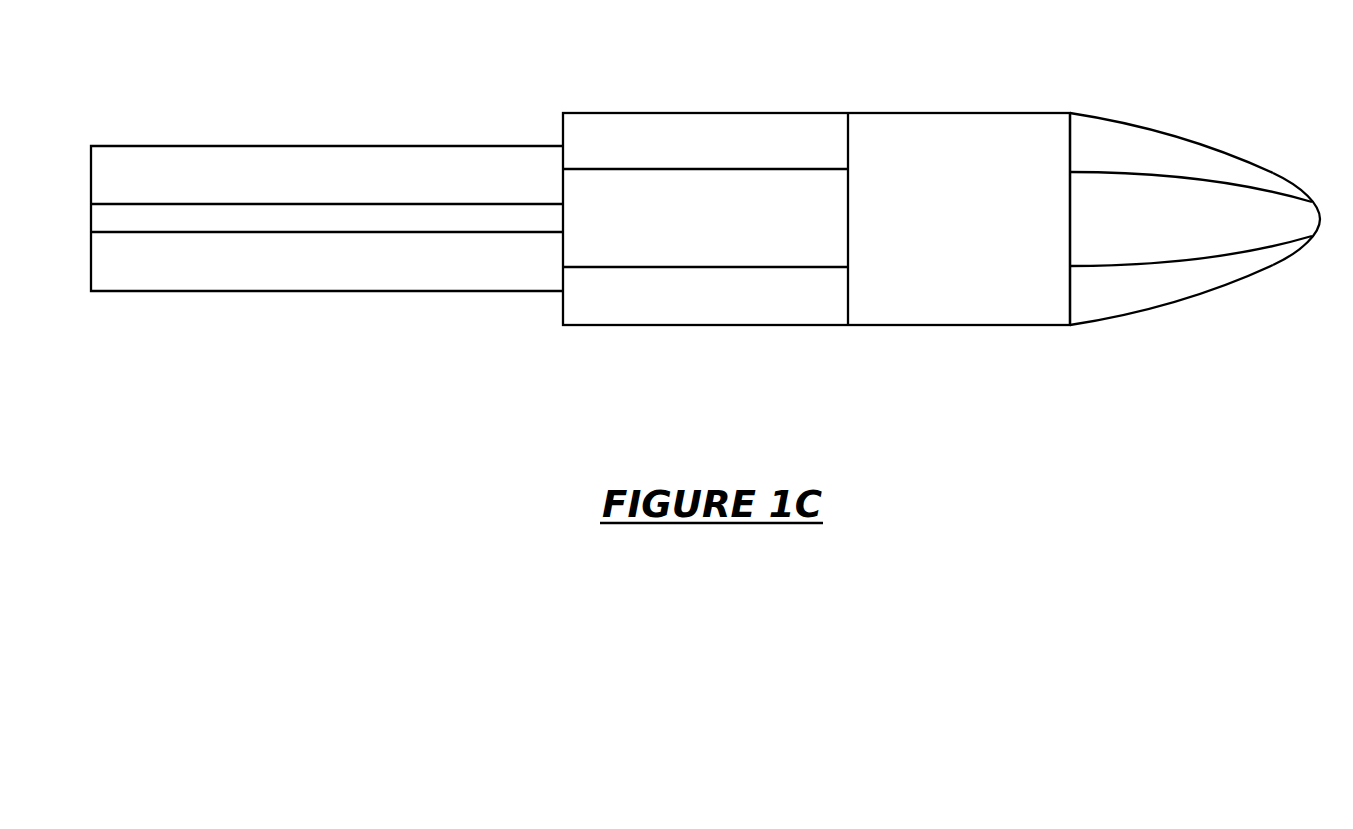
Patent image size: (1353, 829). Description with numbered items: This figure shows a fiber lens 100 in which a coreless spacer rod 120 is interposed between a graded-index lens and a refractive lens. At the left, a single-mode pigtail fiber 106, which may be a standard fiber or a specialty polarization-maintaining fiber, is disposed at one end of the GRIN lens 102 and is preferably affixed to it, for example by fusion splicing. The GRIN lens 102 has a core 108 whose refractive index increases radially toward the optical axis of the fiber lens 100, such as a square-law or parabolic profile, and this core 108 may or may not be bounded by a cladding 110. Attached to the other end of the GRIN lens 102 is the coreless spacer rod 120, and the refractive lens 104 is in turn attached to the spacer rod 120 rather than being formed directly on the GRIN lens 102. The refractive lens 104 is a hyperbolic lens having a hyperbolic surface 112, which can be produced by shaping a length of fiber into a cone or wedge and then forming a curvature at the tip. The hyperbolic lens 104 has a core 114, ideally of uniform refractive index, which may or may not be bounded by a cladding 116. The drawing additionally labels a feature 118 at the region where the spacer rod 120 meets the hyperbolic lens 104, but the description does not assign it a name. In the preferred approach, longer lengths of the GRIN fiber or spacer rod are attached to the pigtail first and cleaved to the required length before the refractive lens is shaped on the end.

The fiber lens 100 is at (705, 235).
The graded-index (GRIN) lens 102 is at (816, 218).
The refractive lens 104 is at (1195, 240).
The single-mode pigtail fiber 106 is at (401, 143).
The core 108 is at (771, 254).
The cladding 110 is at (640, 313).
The hyperbolic surface 112 is at (1212, 293).
The core 114 is at (1137, 237).
The cladding 116 is at (1178, 285).
The junction between ferrule and tip 118 is at (1073, 133).
The coreless spacer rod 120 is at (957, 133).